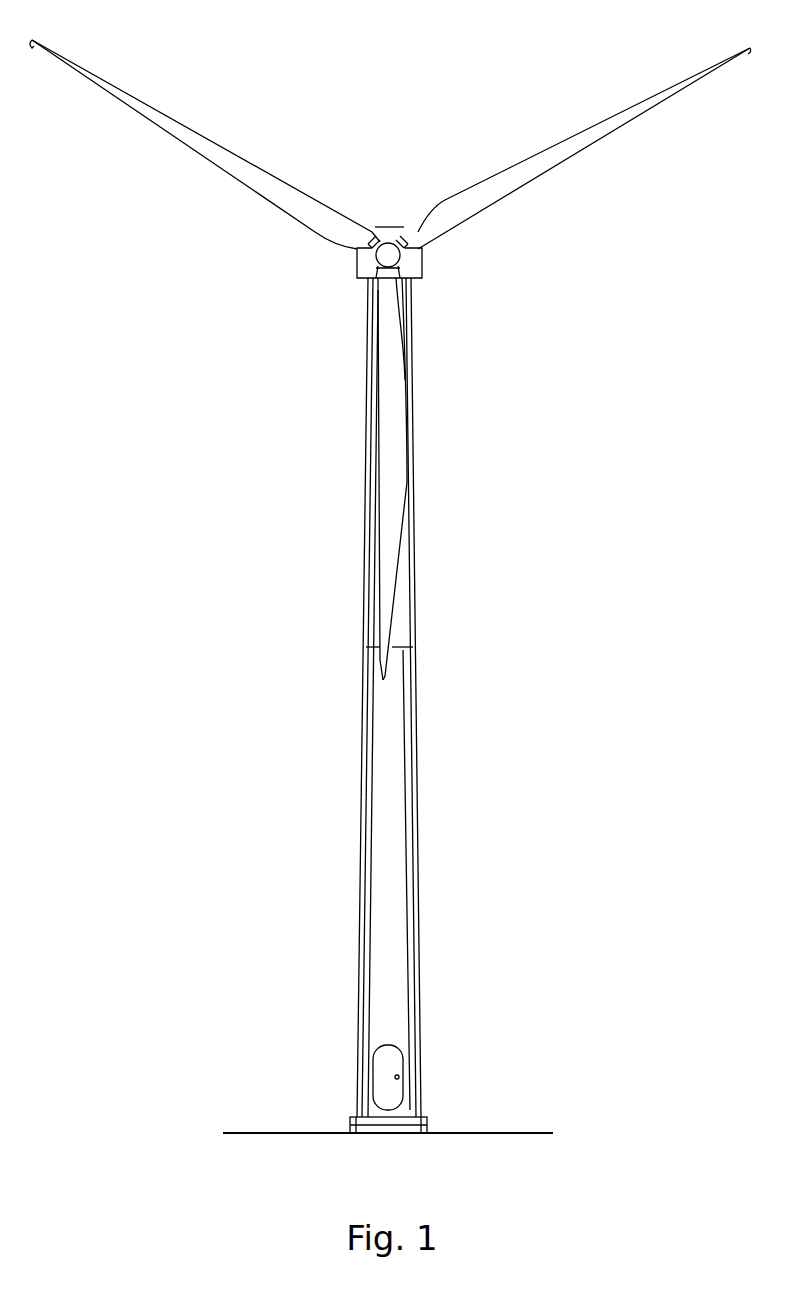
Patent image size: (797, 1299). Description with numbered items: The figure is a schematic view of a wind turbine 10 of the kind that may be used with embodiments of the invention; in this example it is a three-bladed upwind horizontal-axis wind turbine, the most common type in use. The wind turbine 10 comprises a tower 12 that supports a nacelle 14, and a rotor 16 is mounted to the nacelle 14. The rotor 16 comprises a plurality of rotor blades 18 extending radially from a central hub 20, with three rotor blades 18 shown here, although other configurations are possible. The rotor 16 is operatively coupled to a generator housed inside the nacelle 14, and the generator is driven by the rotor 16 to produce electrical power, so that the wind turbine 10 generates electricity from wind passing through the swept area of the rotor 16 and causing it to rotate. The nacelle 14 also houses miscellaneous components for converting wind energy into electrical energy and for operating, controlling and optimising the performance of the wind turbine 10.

The wind turbine 10 is at (390, 577).
The tower 12 is at (415, 692).
The nacelle 14 is at (421, 276).
The rotor 16 is at (390, 350).
The rotor blades 18 is at (270, 172).
The central hub 20 is at (388, 242).